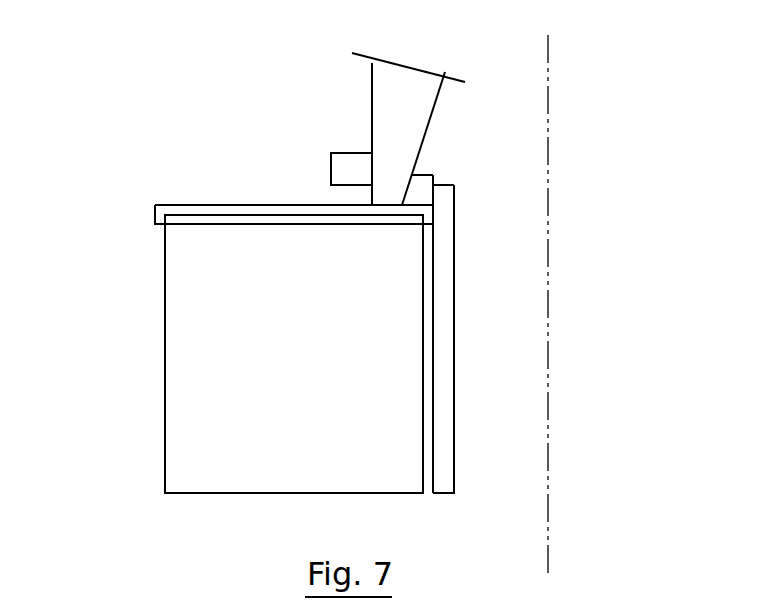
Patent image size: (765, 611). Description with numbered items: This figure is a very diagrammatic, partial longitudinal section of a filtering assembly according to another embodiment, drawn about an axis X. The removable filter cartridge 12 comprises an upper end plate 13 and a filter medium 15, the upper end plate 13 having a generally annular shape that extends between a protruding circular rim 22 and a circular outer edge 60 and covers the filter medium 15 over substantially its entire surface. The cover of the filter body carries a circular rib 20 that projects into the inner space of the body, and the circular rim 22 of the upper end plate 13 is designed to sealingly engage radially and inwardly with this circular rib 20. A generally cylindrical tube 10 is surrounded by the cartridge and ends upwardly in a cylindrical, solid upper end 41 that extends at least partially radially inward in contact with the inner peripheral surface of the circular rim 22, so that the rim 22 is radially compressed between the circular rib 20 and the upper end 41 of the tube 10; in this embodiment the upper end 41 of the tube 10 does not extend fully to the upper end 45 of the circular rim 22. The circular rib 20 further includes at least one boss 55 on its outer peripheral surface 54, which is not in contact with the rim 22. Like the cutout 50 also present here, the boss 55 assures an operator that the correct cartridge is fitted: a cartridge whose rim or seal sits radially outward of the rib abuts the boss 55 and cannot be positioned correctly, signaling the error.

The tube 10 is at (455, 333).
The filter cartridge 12 is at (160, 359).
The upper end plate 13 is at (195, 205).
The filter medium 15 is at (383, 409).
The circular rib 20 is at (407, 120).
The circular rim 22 is at (420, 200).
The upper end 41 is at (445, 197).
The upper end 45 is at (423, 173).
The cutout 50 is at (382, 198).
The outer peripheral surface 54 is at (370, 127).
The boss 55 is at (338, 167).
The circular outer edge 60 is at (154, 215).
The axis X is at (548, 72).